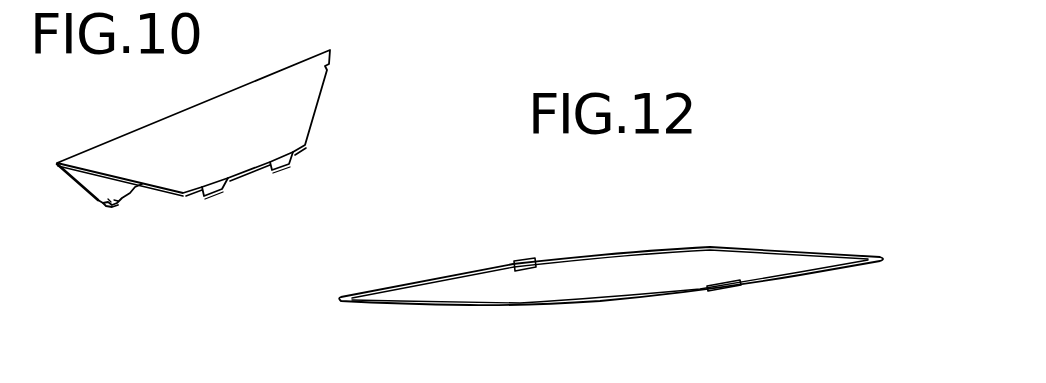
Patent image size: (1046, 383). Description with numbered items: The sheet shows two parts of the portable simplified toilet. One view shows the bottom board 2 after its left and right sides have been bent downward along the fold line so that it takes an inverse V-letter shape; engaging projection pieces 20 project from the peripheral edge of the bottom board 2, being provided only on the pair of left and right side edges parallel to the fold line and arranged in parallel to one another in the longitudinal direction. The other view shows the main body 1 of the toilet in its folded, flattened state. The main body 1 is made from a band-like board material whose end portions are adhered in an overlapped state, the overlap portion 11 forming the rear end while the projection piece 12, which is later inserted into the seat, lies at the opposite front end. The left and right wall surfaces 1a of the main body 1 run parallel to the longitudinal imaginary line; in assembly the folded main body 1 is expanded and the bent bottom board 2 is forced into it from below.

In FIG. 10, the bottom board 2 is at (320, 110).
In FIG. 10, the engaging projection piece 20 is at (122, 205).
In FIG. 12, the main body 1 is at (611, 271).
In FIG. 12, the left and right wall surfaces 1a is at (473, 308).
In FIG. 12, the overlap portion 11 is at (527, 261).
In FIG. 12, the projection piece 12 is at (735, 291).